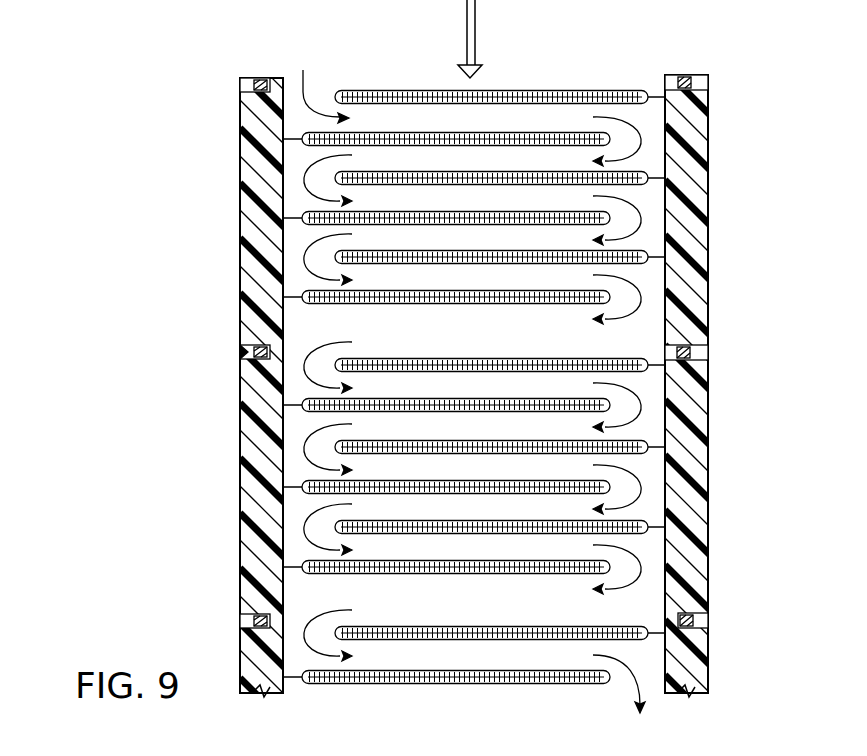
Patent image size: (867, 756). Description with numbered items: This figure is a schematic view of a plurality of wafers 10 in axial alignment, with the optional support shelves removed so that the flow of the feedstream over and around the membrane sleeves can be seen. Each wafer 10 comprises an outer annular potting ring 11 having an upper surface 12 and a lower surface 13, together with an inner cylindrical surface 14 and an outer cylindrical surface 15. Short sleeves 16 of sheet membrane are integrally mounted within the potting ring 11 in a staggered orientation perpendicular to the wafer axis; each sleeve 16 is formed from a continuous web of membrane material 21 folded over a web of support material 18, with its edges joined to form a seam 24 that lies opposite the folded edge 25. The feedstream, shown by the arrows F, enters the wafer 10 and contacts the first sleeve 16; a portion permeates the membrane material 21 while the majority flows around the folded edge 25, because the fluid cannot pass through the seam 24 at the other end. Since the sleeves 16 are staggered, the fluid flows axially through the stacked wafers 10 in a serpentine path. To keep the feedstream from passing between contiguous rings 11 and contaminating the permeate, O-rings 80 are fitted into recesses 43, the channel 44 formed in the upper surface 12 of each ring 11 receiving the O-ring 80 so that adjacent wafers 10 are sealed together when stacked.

The wafer 10 is at (206, 169).
The potting ring 11 is at (240, 181).
The upper surface 12 is at (257, 85).
The lower surface 13 is at (245, 350).
The inner cylindrical surface 14 is at (282, 86).
The outer cylindrical surface 15 is at (240, 222).
The sleeve 16 is at (553, 94).
The support material 18 is at (347, 258).
The membrane material 21 is at (598, 91).
The seam 24 is at (668, 175).
The folded edge 25 is at (606, 140).
The recess 43 is at (692, 629).
The channel 44 is at (252, 90).
The O-ring 80 is at (262, 617).
The feedstream arrows F is at (476, 31).